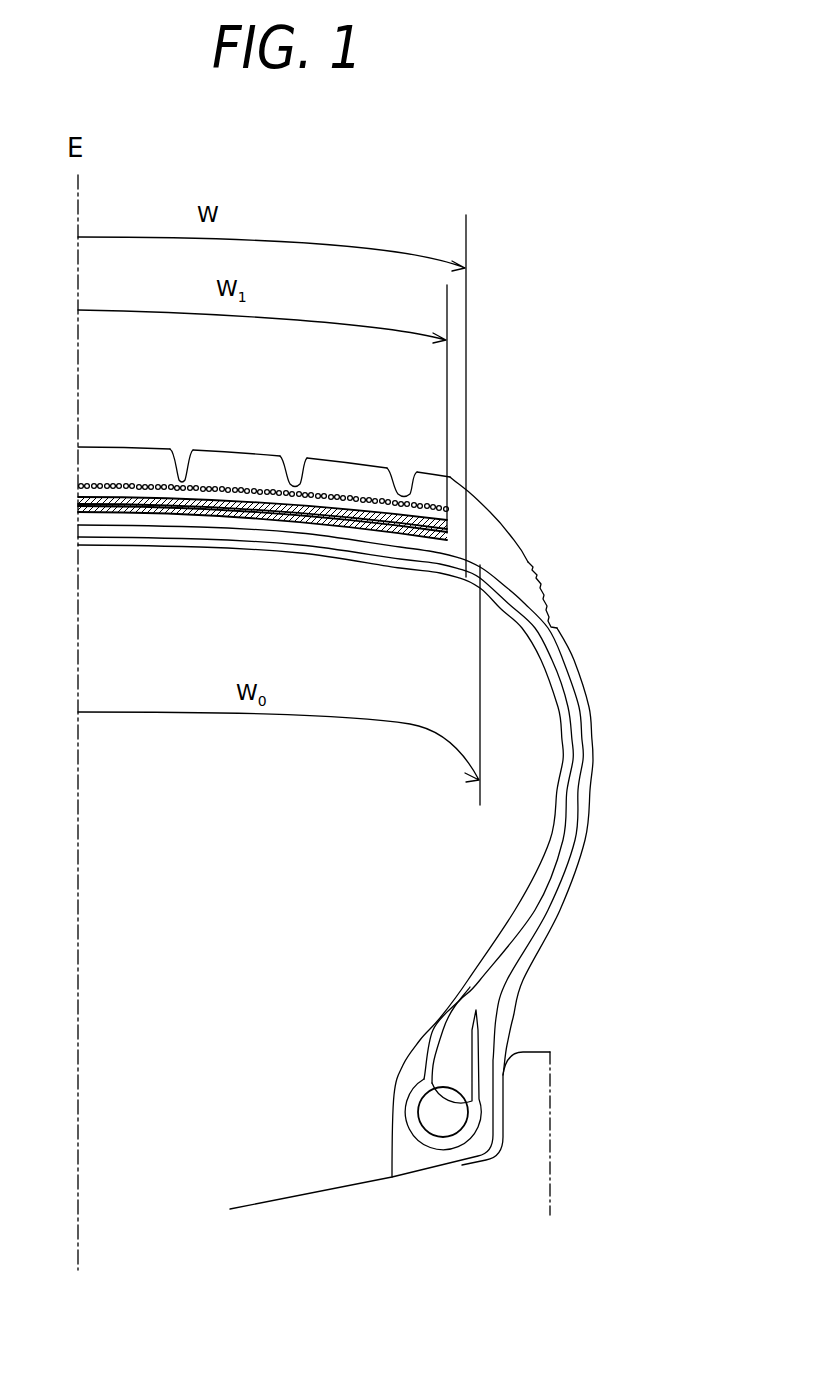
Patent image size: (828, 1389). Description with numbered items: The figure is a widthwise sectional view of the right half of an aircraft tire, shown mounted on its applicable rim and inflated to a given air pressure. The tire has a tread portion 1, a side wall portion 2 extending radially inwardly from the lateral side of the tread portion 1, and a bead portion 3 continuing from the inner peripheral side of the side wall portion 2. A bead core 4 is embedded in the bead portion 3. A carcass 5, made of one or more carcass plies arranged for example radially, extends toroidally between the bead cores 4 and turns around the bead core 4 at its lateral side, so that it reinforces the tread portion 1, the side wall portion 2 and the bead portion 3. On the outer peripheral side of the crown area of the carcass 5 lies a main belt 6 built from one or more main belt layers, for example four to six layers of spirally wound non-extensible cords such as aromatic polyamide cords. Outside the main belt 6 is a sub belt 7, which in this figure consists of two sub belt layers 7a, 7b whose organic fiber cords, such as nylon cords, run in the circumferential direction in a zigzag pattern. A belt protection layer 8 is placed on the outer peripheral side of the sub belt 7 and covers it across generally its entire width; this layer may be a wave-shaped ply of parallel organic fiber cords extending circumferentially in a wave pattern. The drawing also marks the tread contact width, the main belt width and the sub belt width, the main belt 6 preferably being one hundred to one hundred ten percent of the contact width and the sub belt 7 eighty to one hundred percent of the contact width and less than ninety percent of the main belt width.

The tread portion 1 is at (241, 440).
The side wall portion 2 is at (608, 746).
The bead portion 3 is at (421, 1034).
The bead core 4 is at (438, 1112).
The carcass 5 is at (567, 634).
The main belt 6 is at (400, 551).
The sub belt 7 is at (262, 503).
The sub belt layer 7a is at (283, 512).
The sub belt layer 7b is at (225, 508).
The belt protection layer 8 is at (133, 485).